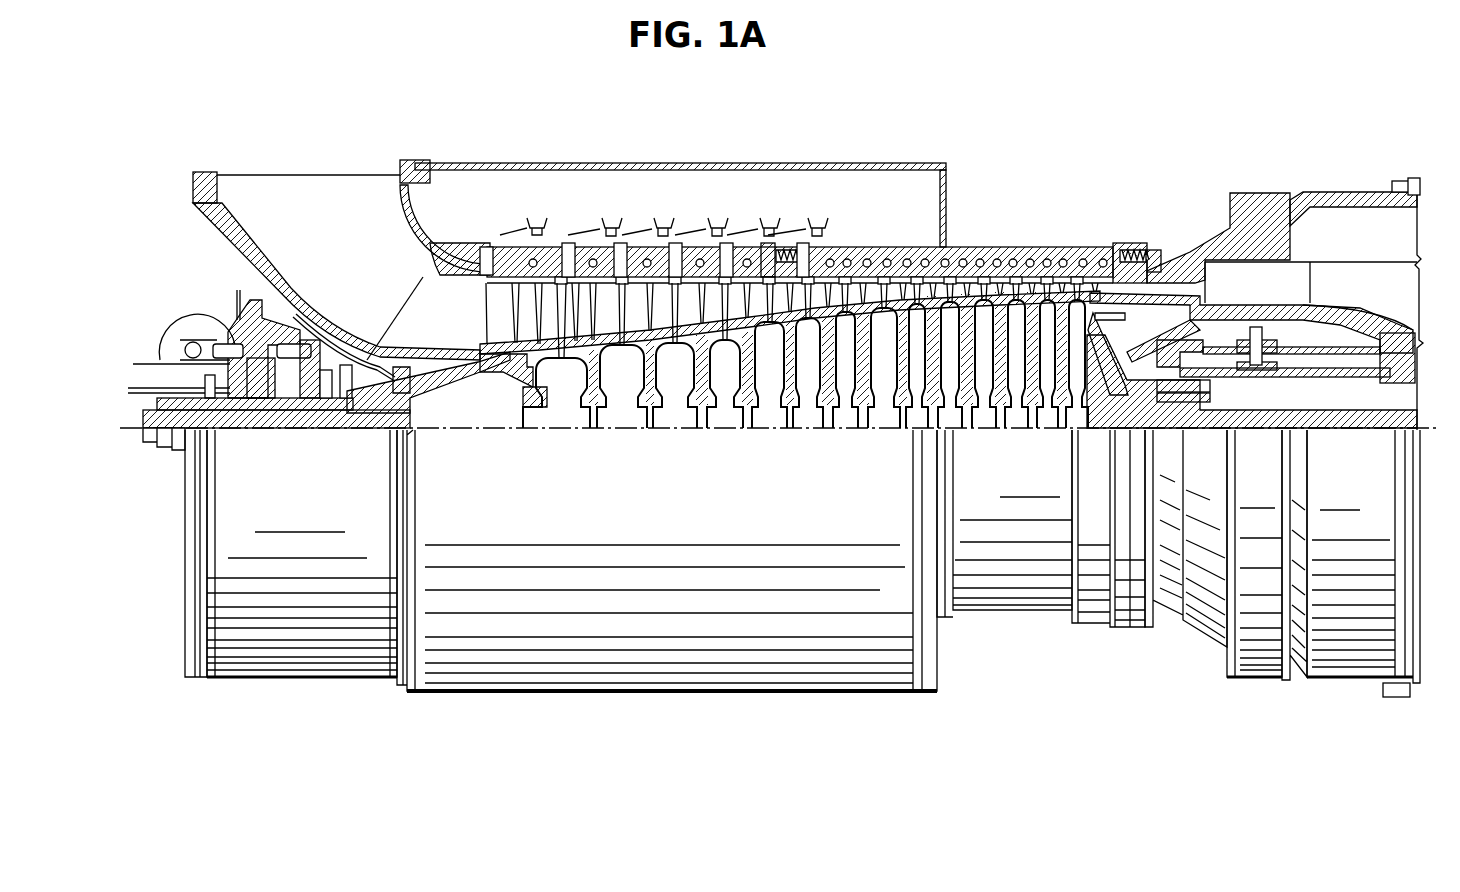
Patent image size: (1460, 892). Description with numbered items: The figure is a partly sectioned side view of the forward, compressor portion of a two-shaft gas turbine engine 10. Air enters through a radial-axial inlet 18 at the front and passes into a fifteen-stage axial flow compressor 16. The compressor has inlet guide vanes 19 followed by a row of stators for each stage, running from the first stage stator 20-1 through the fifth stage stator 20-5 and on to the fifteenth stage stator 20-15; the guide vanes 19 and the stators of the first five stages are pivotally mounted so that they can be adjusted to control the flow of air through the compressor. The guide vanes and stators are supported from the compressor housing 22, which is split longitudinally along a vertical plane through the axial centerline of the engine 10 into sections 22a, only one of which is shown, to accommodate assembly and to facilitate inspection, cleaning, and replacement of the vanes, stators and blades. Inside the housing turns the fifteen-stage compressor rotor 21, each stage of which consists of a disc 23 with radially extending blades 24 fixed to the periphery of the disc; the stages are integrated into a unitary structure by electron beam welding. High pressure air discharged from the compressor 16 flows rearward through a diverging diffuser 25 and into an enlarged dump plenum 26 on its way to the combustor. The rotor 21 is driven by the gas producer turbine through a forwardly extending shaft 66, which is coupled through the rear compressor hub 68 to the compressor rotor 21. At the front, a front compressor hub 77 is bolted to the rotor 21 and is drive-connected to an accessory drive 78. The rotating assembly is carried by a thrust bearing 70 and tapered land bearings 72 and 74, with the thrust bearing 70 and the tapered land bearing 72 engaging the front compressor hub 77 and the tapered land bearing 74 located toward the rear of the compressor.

The gas turbine engine 10 is at (1290, 98).
The axial flow compressor 16 is at (1031, 243).
The radial-axial inlet 18 is at (322, 175).
The inlet guide vanes 19 is at (493, 243).
The first stage stator 20-1 is at (567, 243).
The fifth stage stator 20-5 is at (785, 250).
The fifteenth stage stator 20-15 is at (1096, 282).
The compressor rotor 21 is at (518, 405).
The compressor housing 22 is at (596, 692).
The compressor housing section 22a is at (733, 502).
The disc 23 is at (766, 415).
The blades 24 is at (528, 305).
The diverging diffuser 25 is at (1205, 282).
The dump plenum 26 is at (1358, 207).
The shaft 66 is at (1368, 379).
The rear compressor hub 68 is at (1160, 432).
The thrust bearing 70 is at (293, 415).
The tapered land bearing 72 is at (340, 412).
The tapered land bearing 74 is at (1193, 428).
The front compressor hub 77 is at (472, 374).
The accessory drive 78 is at (228, 318).